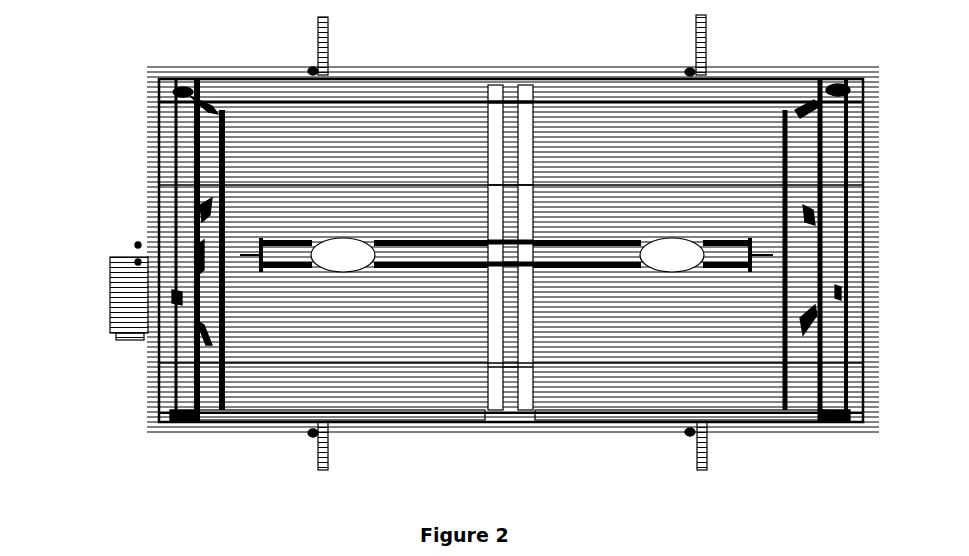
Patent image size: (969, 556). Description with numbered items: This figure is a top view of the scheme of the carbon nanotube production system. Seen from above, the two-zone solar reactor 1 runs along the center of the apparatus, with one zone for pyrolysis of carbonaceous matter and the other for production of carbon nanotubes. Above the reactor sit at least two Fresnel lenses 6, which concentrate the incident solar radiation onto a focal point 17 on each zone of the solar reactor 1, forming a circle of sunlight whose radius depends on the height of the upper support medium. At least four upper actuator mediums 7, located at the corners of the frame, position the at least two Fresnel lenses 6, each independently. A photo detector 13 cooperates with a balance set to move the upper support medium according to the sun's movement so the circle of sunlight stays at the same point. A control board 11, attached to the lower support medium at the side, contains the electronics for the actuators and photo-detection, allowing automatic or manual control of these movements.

The two-zone solar reactor 1 is at (495, 255).
The Fresnel lens 6 is at (265, 125).
The upper actuator medium 7 is at (313, 52).
The control board 11 is at (108, 302).
The photo detector 13 is at (132, 242).
The focal point 17 is at (345, 253).